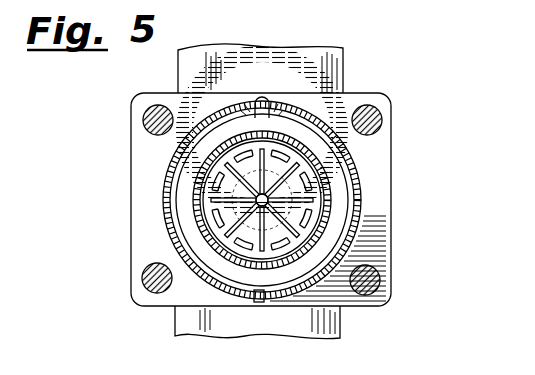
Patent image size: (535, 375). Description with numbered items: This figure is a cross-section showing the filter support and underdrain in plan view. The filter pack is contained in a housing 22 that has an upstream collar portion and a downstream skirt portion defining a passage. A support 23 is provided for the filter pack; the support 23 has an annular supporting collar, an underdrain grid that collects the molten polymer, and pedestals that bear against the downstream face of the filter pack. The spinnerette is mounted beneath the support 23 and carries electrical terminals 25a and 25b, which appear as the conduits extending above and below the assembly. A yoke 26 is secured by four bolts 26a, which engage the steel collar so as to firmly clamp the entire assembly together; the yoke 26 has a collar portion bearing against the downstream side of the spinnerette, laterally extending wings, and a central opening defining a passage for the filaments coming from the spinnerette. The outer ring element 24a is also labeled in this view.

The housing 22 is at (165, 197).
The support 23 is at (298, 128).
The outer ring 24a is at (363, 189).
The electrical terminal 25a is at (192, 68).
The electrical terminal 25b is at (184, 326).
The yoke 26 is at (391, 144).
The bolts 26a is at (156, 120).